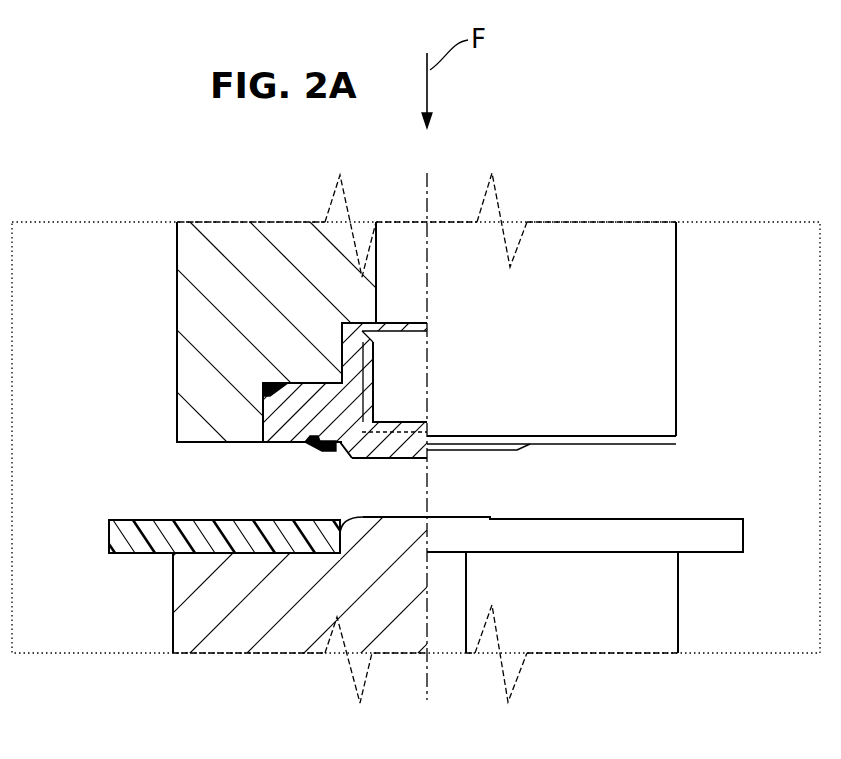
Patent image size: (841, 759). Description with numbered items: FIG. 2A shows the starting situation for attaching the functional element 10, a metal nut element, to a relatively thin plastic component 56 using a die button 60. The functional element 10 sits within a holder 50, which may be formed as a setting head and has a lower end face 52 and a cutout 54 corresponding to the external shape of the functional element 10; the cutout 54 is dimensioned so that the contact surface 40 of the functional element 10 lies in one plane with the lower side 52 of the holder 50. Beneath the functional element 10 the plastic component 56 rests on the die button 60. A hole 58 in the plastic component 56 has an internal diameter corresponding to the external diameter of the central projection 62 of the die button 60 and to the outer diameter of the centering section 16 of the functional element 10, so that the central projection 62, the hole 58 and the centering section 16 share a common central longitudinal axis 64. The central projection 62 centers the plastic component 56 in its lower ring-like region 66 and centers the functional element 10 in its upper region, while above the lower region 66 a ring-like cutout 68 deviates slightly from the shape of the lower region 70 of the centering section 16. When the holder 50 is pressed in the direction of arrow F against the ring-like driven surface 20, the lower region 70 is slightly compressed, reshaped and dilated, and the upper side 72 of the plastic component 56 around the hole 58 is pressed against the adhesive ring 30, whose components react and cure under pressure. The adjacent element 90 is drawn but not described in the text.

The functional element 10 is at (358, 384).
The centering section 16 is at (507, 452).
The ring surface 20 is at (318, 373).
The adhesive ring 30 is at (323, 447).
The contact surface 40 is at (290, 450).
The holder 50 is at (186, 268).
The lower end face 52 is at (207, 453).
The cutout 54 is at (265, 402).
The plastic component 56 is at (130, 558).
The hole 58 is at (355, 545).
The die button 60 is at (193, 650).
The central projection 62 is at (405, 527).
The central longitudinal axis 64 is at (427, 190).
The lower region 66 is at (337, 607).
The ring-like cutout 68 is at (350, 527).
The lower region of the centering section 70 is at (486, 458).
The upper side 72 is at (140, 508).
The counterpart 90 is at (410, 265).